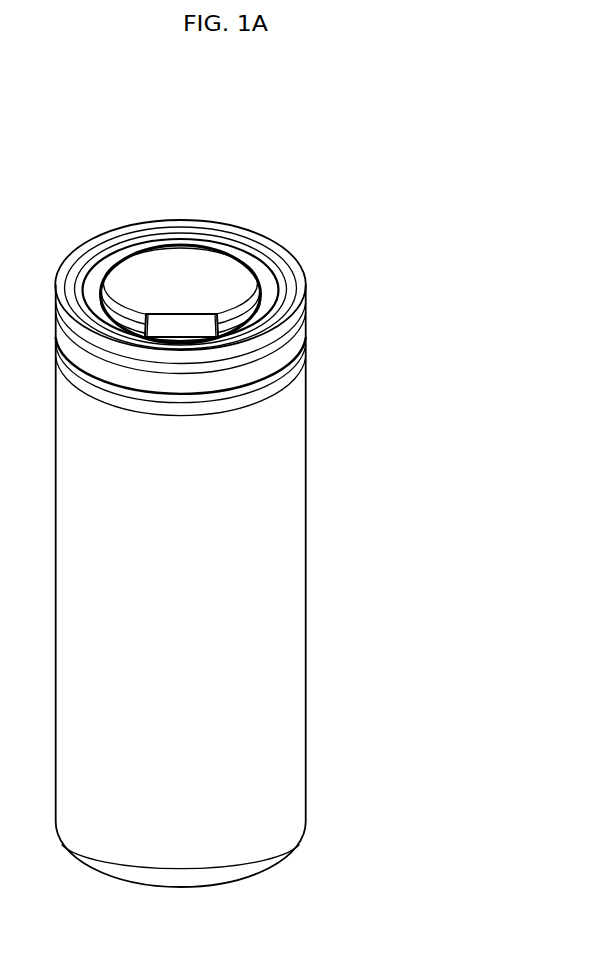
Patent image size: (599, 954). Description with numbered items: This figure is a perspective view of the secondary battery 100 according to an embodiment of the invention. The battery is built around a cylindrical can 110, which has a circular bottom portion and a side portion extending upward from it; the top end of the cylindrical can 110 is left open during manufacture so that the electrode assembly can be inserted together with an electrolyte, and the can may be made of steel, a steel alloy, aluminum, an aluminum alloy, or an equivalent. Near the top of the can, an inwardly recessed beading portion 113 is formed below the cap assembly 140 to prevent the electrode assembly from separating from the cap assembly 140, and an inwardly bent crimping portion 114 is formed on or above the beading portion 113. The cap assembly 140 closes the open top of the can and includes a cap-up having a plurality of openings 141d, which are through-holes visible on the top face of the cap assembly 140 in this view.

The secondary battery 100 is at (231, 494).
The cylindrical can 110 is at (306, 580).
The beading portion 113 is at (307, 342).
The crimping portion 114 is at (290, 275).
The cap assembly 140 is at (170, 248).
The openings 141d is at (172, 327).